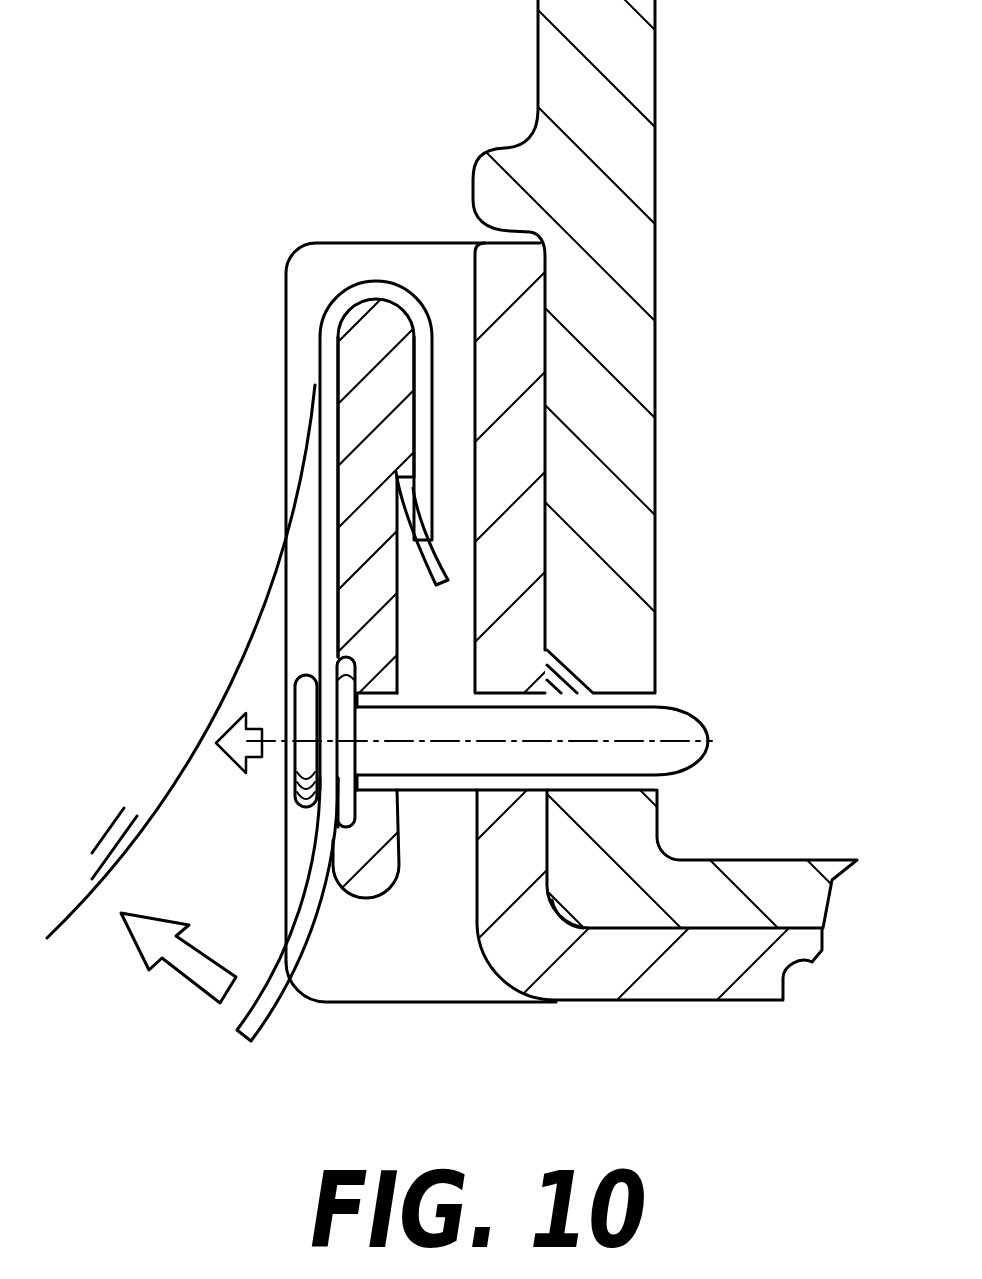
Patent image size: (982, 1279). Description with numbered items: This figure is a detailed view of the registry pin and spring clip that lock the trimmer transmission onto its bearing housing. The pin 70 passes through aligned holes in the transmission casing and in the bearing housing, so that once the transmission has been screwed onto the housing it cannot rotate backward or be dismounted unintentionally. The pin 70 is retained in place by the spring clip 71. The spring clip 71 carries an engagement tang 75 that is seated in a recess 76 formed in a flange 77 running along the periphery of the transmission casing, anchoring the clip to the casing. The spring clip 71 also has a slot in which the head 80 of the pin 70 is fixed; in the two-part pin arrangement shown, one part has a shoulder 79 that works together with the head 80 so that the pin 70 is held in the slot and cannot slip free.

The pin 70 is at (702, 760).
The spring clip 71 is at (320, 868).
The engagement tang 75 is at (398, 480).
The recess 76 is at (315, 387).
The flange 77 is at (385, 335).
The shoulder 79 is at (385, 892).
The head 80 is at (305, 697).